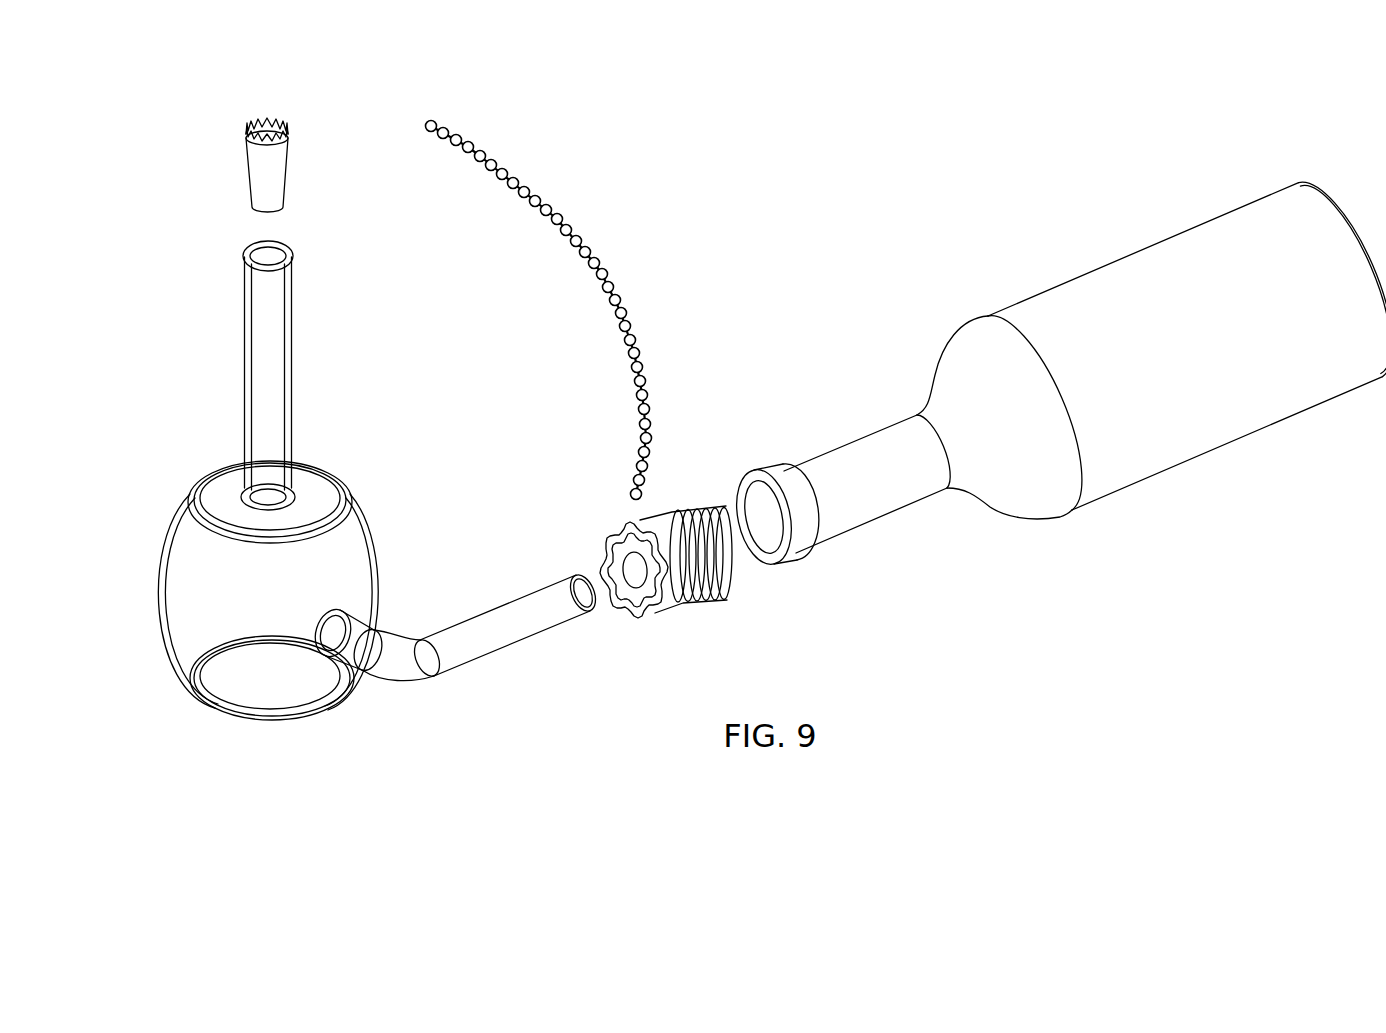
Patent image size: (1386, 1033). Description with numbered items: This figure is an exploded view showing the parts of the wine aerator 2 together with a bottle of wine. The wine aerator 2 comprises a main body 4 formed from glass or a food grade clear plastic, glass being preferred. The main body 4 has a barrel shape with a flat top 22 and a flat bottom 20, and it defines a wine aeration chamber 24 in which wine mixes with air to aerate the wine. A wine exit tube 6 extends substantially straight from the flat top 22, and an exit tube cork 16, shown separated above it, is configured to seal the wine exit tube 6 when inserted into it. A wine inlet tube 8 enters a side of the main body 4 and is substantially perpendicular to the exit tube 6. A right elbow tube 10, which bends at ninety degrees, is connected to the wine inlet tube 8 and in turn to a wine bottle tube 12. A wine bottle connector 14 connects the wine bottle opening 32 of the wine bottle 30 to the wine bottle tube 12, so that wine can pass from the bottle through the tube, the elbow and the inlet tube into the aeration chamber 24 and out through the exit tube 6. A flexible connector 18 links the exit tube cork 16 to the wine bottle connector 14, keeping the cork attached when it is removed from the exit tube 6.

The wine aerator 2 is at (292, 514).
The main body 4 is at (372, 556).
The wine exit tube 6 is at (288, 372).
The wine inlet tube 8 is at (350, 623).
The right elbow tube 10 is at (388, 680).
The wine bottle tube 12 is at (482, 657).
The wine bottle connector 14 is at (680, 592).
The exit tube cork 16 is at (288, 175).
The flexible connector 18 is at (627, 294).
The flat bottom 20 is at (268, 720).
The flat top 22 is at (230, 488).
The wine aeration chamber 24 is at (212, 588).
The wine bottle 30 is at (1167, 450).
The wine bottle opening 32 is at (771, 478).